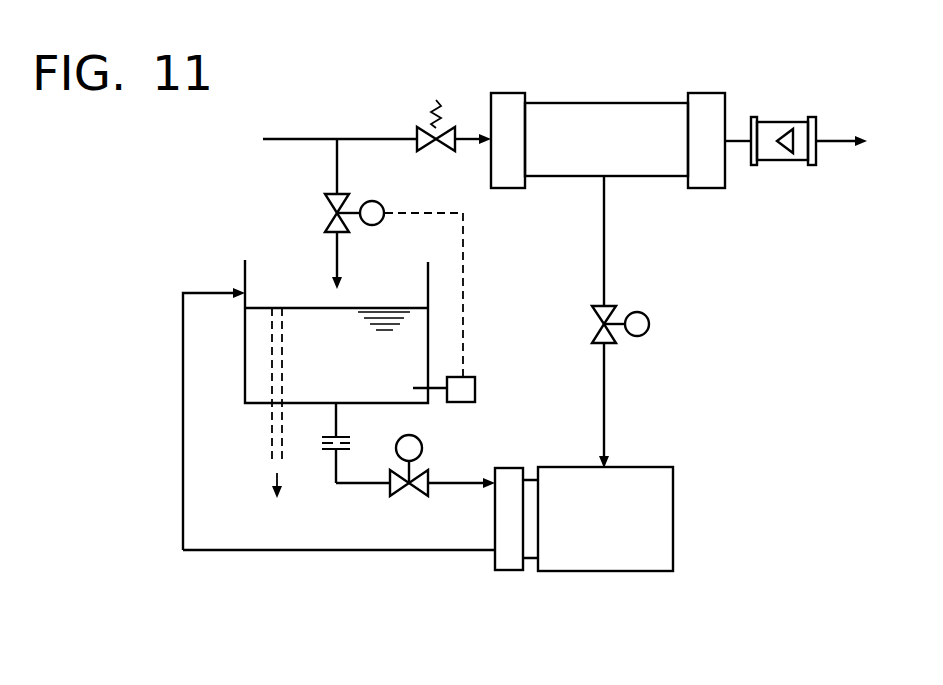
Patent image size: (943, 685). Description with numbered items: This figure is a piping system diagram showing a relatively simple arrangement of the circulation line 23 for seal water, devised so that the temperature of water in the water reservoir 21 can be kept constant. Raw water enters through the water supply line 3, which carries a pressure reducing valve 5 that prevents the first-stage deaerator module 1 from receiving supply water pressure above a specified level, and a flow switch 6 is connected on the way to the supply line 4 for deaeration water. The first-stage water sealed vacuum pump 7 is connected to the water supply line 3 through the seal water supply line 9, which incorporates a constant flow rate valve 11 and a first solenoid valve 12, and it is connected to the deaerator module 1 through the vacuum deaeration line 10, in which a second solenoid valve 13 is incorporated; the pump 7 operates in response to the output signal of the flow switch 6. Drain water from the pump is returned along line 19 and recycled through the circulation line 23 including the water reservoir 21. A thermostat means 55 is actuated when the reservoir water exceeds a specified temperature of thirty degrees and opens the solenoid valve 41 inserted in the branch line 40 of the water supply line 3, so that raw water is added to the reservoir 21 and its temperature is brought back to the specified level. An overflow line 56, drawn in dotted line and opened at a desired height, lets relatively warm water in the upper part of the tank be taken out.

The first-stage deaerator module 1 is at (612, 88).
The water supply line 3 is at (272, 137).
The supply line for deaeration water 4 is at (828, 139).
The pressure reducing valve 5 is at (438, 100).
The flow switch 6 is at (781, 122).
The first-stage water sealed vacuum pump 7 is at (646, 584).
The seal water supply line 9 is at (455, 483).
The vacuum deaeration line 10 is at (604, 255).
The constant flow rate valve 11 is at (322, 437).
The first solenoid valve 12 is at (396, 441).
The second solenoid valve 13 is at (650, 324).
The return line 19 is at (456, 552).
The water reservoir 21 is at (245, 270).
The circulation line 23 is at (354, 500).
The branch line 40 is at (337, 165).
The solenoid valve 41 is at (372, 201).
The thermostat means 55 is at (475, 388).
The overflow line 56 is at (270, 448).